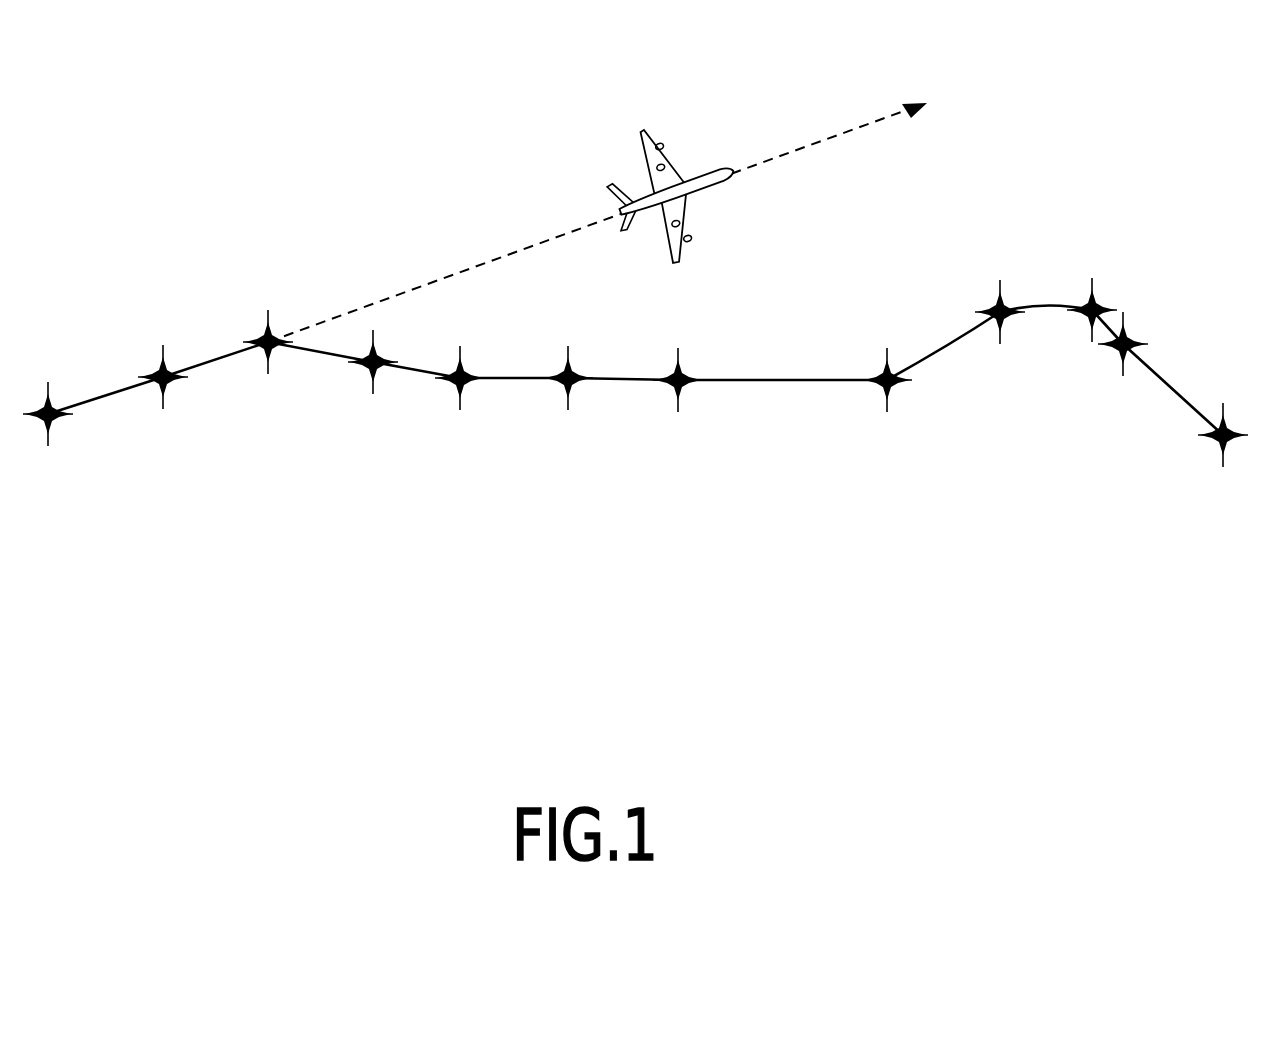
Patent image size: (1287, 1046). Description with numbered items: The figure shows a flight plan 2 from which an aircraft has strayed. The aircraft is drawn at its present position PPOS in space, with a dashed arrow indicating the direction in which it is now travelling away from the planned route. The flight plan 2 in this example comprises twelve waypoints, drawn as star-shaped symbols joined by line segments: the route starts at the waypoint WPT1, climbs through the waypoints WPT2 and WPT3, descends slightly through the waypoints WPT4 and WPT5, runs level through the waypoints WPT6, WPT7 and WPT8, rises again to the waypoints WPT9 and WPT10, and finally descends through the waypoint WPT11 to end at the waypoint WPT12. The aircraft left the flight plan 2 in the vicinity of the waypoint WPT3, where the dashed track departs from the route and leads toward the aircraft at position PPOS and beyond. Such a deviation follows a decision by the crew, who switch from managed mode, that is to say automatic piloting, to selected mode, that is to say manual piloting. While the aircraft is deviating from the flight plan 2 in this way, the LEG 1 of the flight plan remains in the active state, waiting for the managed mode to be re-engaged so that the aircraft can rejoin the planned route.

The LEG 1 is at (228, 348).
The flight plan 2 is at (891, 520).
The position PPOS is at (653, 186).
The waypoint WPT1 is at (59, 442).
The waypoint WPT2 is at (136, 358).
The waypoint WPT3 is at (283, 328).
The waypoint WPT4 is at (375, 386).
The waypoint WPT5 is at (473, 365).
The waypoint WPT6 is at (582, 401).
The waypoint WPT7 is at (706, 400).
The waypoint WPT8 is at (905, 400).
The waypoint WPT9 is at (968, 304).
The waypoint WPT10 is at (1127, 294).
The waypoint WPT11 is at (1115, 365).
The waypoint WPT12 is at (1229, 458).